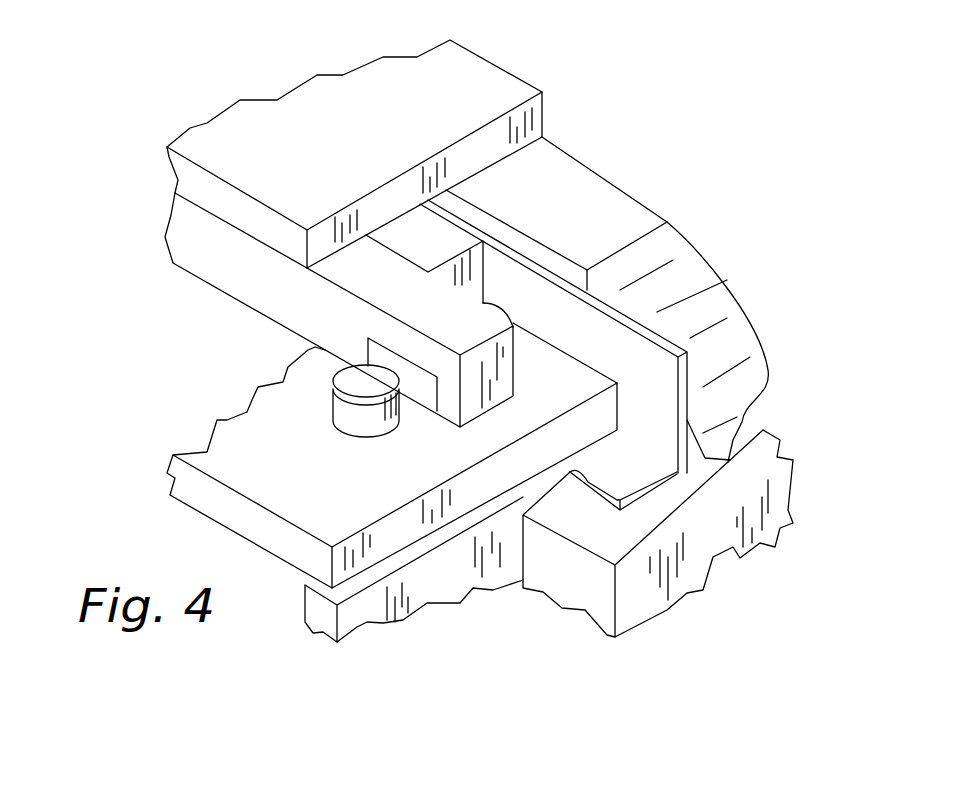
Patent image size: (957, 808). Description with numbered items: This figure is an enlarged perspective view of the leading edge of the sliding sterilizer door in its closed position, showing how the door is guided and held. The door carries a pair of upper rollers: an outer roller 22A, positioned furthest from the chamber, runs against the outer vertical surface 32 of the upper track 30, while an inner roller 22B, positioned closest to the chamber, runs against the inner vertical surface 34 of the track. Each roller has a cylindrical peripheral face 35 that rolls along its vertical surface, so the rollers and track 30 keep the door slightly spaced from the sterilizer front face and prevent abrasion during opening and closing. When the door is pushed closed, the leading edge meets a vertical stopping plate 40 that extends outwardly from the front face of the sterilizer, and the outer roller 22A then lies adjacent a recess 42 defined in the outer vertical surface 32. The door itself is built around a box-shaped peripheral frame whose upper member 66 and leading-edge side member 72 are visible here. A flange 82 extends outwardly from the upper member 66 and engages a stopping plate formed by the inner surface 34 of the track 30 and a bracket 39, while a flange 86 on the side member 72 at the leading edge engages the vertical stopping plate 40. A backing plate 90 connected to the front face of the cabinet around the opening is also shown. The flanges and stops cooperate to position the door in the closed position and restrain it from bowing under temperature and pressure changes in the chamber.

The outer roller 22A is at (338, 406).
The inner roller 22B is at (500, 307).
The upper track 30 is at (309, 310).
The outer vertical surface 32 is at (245, 282).
The inner vertical surface 34 is at (548, 335).
The cylindrical peripheral face 35 is at (347, 418).
The bracket 39 is at (235, 160).
The vertical stopping plate 40 is at (567, 588).
The recess 42 is at (426, 390).
The upper member 66 is at (256, 478).
The side member 72 is at (359, 623).
The flange 82 is at (420, 232).
The flange 86 is at (635, 472).
The backing plate 90 is at (557, 177).